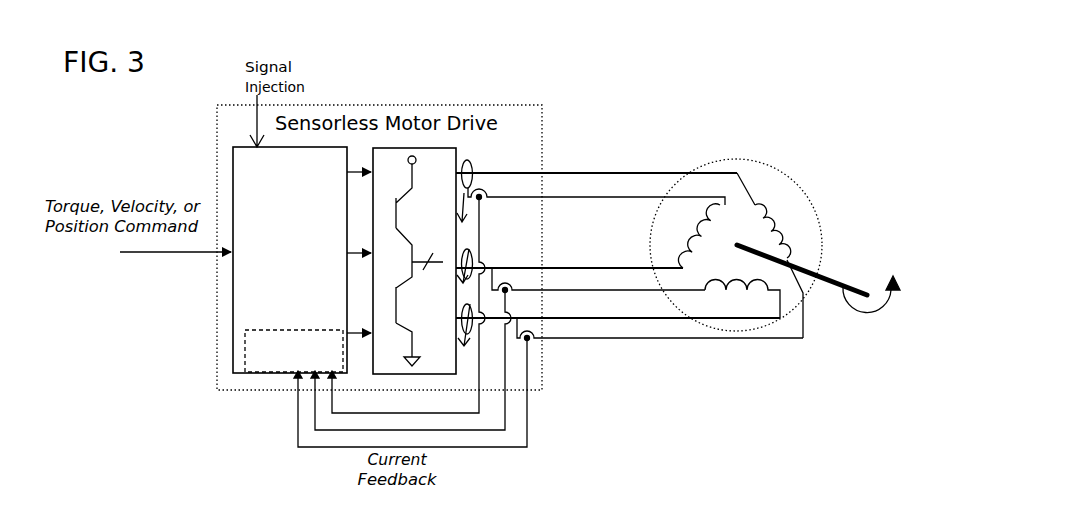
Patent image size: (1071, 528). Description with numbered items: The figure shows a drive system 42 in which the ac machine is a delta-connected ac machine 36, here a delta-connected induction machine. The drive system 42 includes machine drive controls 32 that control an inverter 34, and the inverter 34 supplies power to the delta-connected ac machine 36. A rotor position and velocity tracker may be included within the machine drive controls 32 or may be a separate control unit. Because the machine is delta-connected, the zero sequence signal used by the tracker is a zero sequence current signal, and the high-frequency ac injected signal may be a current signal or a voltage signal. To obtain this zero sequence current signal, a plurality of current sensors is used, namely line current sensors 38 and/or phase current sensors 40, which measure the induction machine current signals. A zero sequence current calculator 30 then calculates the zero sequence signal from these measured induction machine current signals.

The zero sequence current calculator 30 is at (338, 350).
The machine drive controls 32 is at (290, 190).
The inverter 34 is at (442, 221).
The delta-connected ac machine 36 is at (763, 170).
The line current sensors 38 is at (472, 255).
The phase current sensors 40 is at (505, 288).
The drive system 42 is at (528, 158).